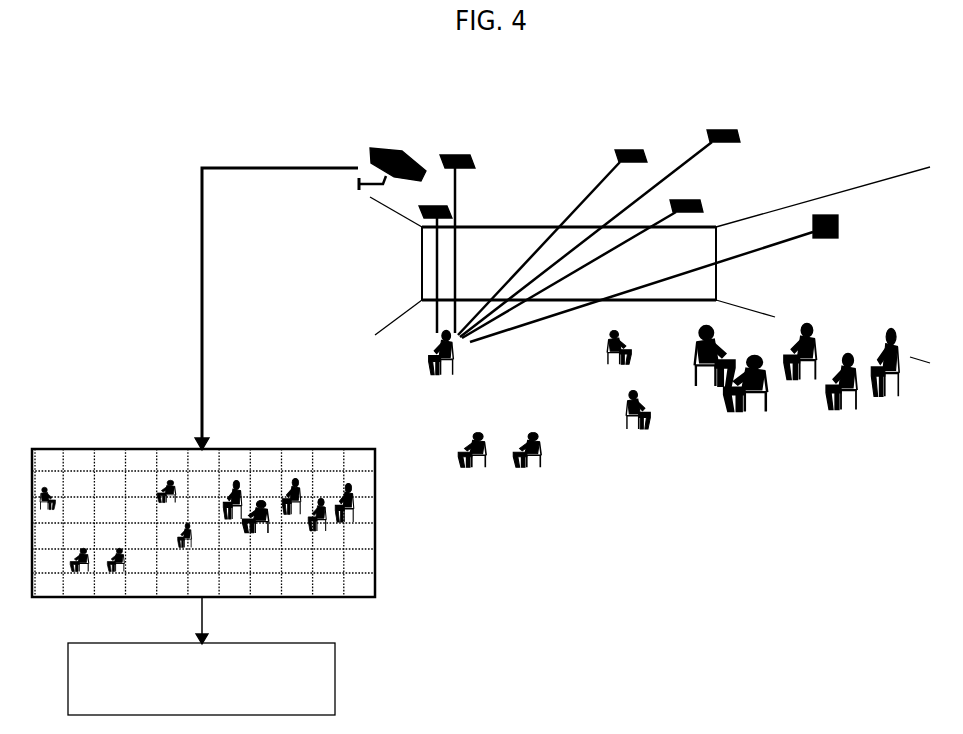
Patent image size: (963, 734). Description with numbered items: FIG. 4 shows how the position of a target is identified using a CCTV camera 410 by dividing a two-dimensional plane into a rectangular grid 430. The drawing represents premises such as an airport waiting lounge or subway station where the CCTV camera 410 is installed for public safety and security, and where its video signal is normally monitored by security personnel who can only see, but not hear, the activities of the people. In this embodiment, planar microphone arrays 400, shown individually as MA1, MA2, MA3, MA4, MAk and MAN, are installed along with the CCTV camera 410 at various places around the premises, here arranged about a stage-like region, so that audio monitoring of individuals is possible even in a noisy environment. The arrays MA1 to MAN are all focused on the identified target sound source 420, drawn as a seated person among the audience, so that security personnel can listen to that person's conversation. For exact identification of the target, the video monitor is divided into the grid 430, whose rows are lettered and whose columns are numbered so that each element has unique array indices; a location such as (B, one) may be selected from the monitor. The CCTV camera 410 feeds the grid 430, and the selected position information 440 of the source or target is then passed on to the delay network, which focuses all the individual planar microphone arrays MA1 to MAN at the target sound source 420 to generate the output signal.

The planar microphone arrays 400 is at (589, 70).
The CCTV camera 410 is at (392, 153).
The target sound source 420 is at (423, 352).
The grid 430 is at (218, 513).
The position information 440 is at (228, 656).
The planar microphone array MA1 is at (384, 269).
The planar microphone array MA2 is at (464, 222).
The planar microphone array MA3 is at (552, 217).
The planar microphone array MA4 is at (601, 250).
The planar microphone array MAk is at (616, 211).
The planar microphone array MAN is at (675, 278).